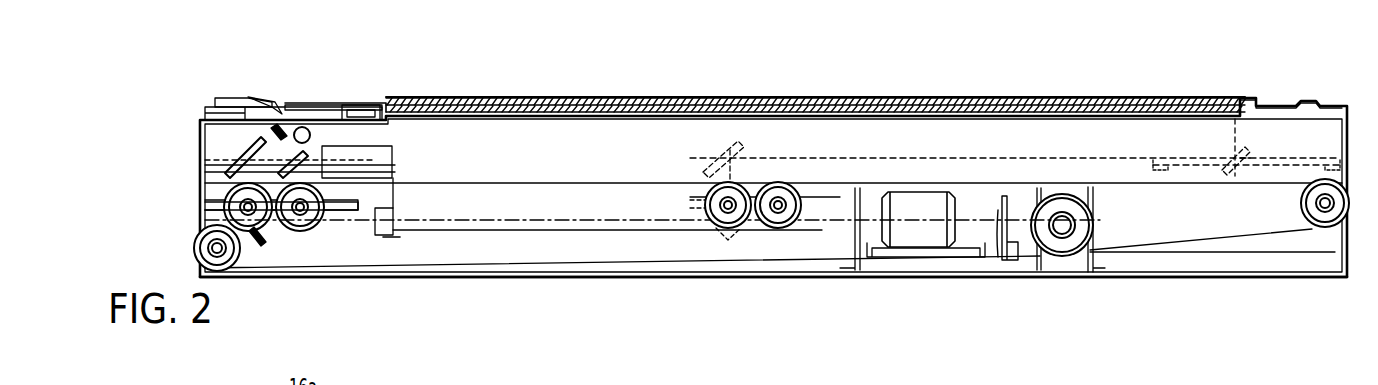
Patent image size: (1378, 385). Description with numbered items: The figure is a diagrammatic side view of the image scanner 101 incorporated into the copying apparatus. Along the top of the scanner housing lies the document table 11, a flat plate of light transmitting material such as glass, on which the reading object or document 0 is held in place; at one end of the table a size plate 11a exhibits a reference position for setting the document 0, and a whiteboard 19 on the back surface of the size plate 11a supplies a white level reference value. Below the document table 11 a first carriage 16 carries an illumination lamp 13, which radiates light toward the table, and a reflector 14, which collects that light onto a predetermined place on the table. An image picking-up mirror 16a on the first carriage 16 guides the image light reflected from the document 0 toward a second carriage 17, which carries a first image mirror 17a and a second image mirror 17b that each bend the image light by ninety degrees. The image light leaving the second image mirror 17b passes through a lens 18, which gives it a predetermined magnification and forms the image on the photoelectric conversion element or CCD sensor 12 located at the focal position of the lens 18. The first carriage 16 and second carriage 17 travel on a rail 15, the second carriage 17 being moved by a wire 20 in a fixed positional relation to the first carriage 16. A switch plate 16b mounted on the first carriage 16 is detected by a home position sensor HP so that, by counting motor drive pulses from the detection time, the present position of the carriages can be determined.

The reading object (document) 0 is at (660, 100).
The document table 11 is at (538, 104).
The size plate 11a is at (344, 110).
The photoelectric conversion element (CCD sensor) 12 is at (1003, 244).
The illumination lamp 13 is at (305, 127).
The reflector 14 is at (283, 135).
The rail 15 is at (538, 222).
The first carriage 16 is at (394, 168).
The image picking-up mirror 16a is at (283, 208).
The switch plate 16b is at (395, 203).
The second carriage 17 is at (357, 210).
The first image mirror 17a is at (241, 152).
The second image mirror 17b is at (255, 247).
The lens 18 is at (898, 238).
The whiteboard 19 is at (329, 112).
The wire 20 is at (602, 229).
The image scanner 101 is at (1281, 106).
The home position sensor HP is at (392, 238).